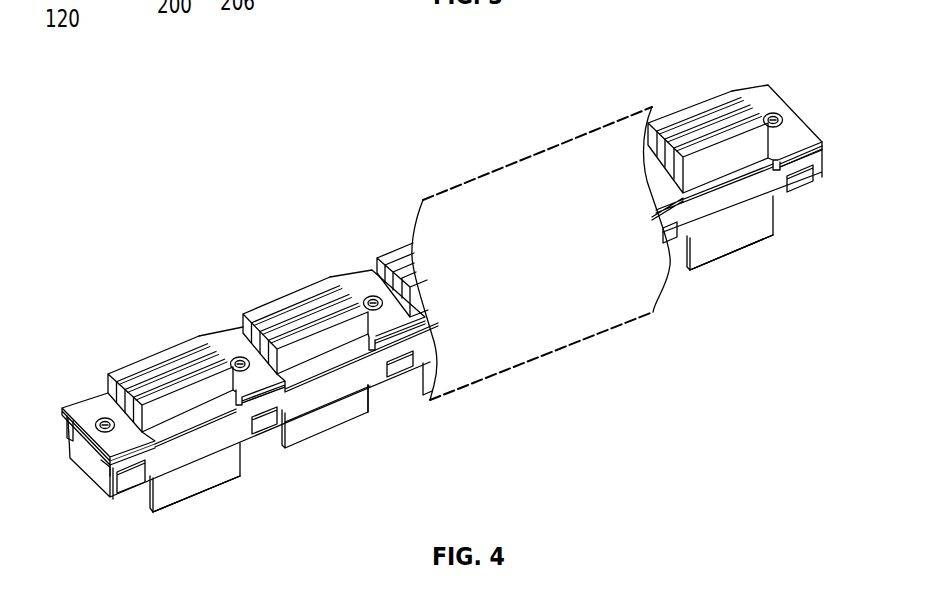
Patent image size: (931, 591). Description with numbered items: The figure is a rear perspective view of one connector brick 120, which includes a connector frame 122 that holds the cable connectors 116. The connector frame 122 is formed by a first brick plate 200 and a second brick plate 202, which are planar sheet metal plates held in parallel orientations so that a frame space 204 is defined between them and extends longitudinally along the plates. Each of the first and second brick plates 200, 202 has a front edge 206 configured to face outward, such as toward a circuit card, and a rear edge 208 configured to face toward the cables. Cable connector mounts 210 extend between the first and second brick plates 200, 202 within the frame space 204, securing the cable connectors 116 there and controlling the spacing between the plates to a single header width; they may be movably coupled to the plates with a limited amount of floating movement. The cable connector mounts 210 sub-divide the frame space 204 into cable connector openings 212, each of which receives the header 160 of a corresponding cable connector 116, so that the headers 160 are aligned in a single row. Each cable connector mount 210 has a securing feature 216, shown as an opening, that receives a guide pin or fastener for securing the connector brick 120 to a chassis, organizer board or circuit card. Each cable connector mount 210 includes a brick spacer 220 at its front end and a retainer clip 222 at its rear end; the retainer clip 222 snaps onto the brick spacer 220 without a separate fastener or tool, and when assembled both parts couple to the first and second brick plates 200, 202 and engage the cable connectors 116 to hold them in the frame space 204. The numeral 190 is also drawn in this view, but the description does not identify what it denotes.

The connector brick 120 is at (802, 60).
The first brick plate 200 is at (66, 420).
The securing feature 216 is at (231, 354).
The frame space 204 is at (249, 341).
The retainer clip 222 is at (257, 383).
The cable connector opening 212 is at (345, 284).
The cable connector mount 210 is at (364, 282).
The second brick plate 202 is at (306, 399).
The front edge 206 is at (323, 360).
The rear edge 208 is at (364, 376).
The brick spacer 220 is at (268, 434).
The connector frame 122 is at (185, 450).
The lower housing 190 is at (187, 511).
The header 160 is at (162, 498).
The cable connector 116 is at (169, 525).